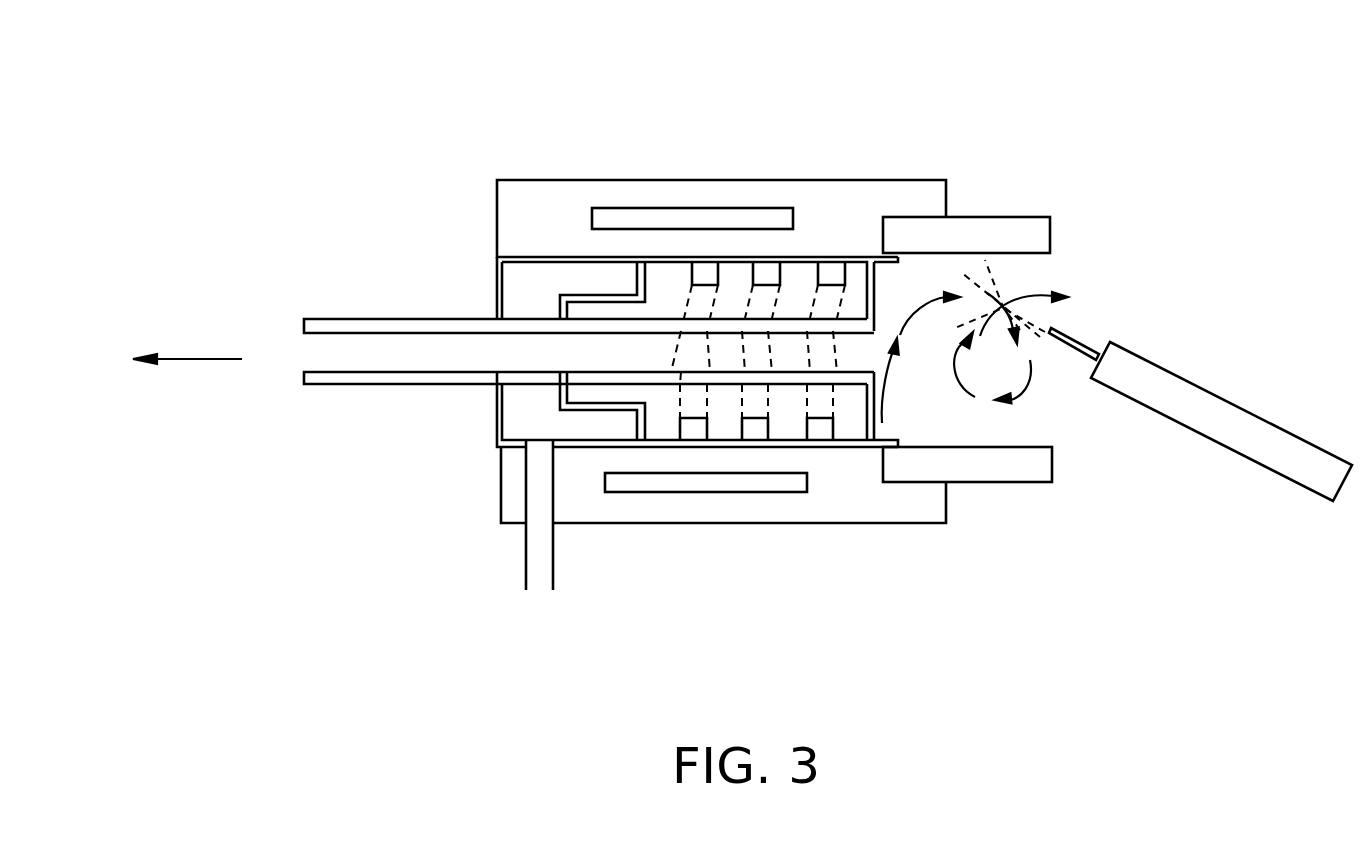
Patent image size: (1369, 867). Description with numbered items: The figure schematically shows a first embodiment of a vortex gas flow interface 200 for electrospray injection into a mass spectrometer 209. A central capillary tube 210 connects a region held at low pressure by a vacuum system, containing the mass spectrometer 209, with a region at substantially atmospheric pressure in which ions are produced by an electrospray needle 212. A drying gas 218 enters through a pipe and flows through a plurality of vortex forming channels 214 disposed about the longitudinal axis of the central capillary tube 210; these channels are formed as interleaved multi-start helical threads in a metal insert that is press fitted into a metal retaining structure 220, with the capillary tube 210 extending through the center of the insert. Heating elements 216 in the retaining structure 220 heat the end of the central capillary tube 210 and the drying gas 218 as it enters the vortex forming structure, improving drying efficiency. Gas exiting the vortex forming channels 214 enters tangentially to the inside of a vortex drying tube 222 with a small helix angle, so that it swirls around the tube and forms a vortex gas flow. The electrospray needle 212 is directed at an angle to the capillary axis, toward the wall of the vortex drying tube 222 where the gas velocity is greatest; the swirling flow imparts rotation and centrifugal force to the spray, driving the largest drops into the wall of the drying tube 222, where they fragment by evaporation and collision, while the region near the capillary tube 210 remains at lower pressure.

The vortex gas flow interface 200 is at (773, 53).
The mass spectrometer 209 is at (154, 354).
The central capillary tube 210 is at (276, 371).
The electrospray needle 212 is at (1080, 338).
The vortex forming channels 214 is at (838, 255).
The heating element 216 is at (683, 208).
The drying gas 218 is at (530, 606).
The retaining structure 220 is at (530, 180).
The vortex drying tube 222 is at (1007, 482).